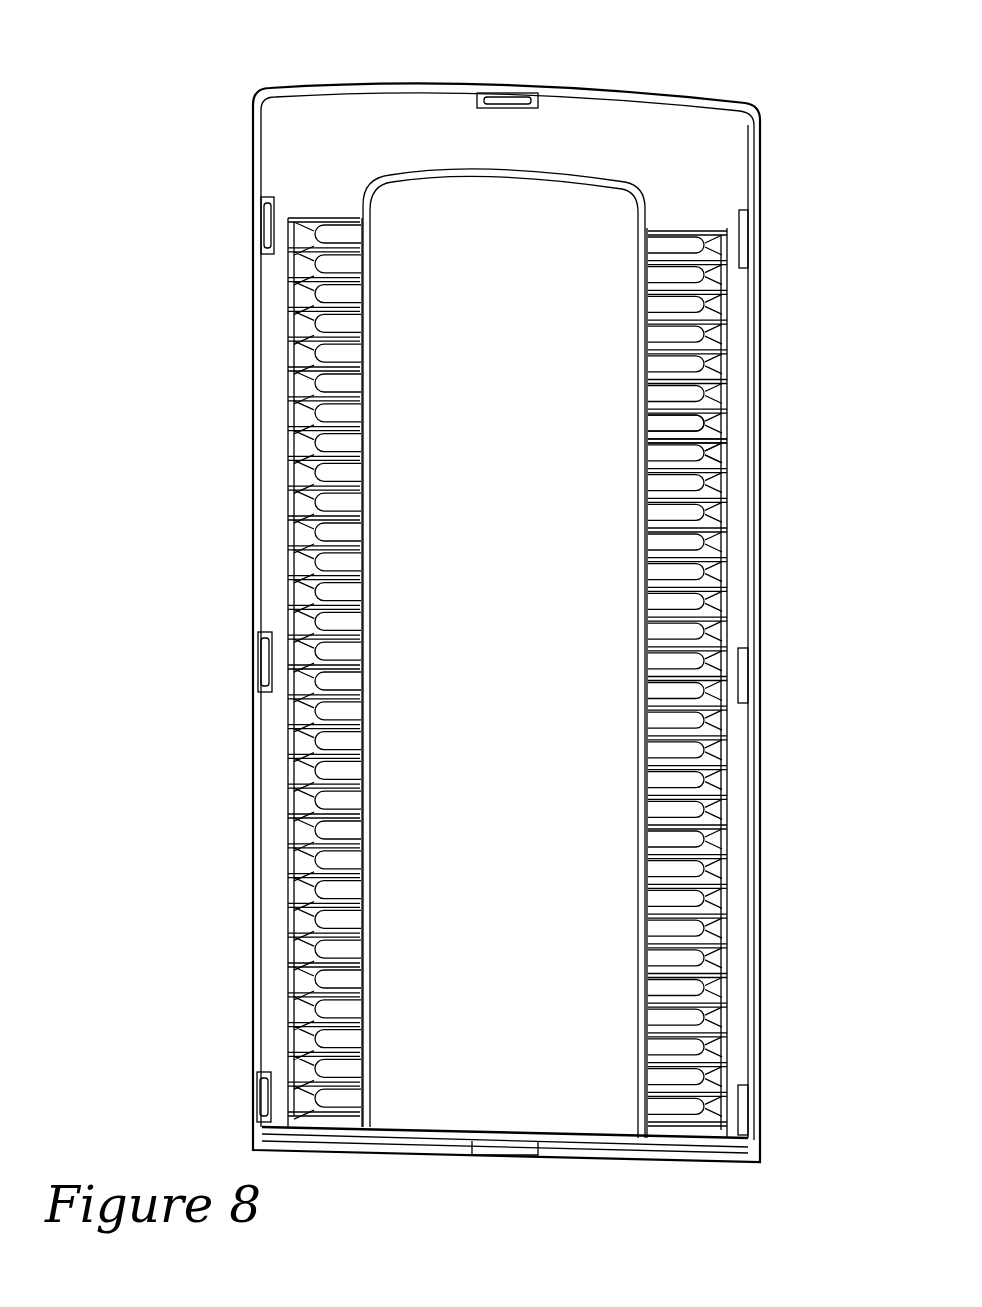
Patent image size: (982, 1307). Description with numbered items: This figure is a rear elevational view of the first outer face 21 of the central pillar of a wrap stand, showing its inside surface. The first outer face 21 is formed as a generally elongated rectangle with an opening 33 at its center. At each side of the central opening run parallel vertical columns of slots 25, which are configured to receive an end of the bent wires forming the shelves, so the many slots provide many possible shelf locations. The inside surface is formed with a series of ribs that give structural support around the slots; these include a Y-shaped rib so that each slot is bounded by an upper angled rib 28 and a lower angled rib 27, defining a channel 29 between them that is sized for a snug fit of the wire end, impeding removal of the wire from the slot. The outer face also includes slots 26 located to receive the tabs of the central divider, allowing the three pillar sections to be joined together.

The first outer face 21 is at (730, 128).
The slots 25 is at (680, 425).
The slots 26 is at (514, 100).
The lower angled rib 27 is at (725, 440).
The upper angled rib 28 is at (718, 410).
The channel 29 is at (720, 427).
The opening 33 is at (546, 252).